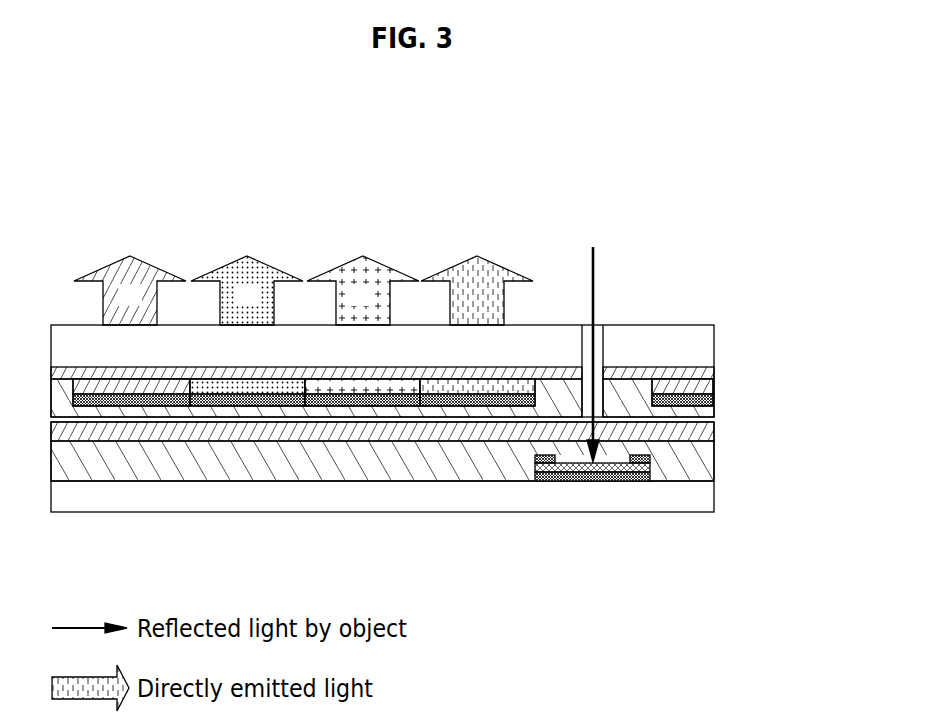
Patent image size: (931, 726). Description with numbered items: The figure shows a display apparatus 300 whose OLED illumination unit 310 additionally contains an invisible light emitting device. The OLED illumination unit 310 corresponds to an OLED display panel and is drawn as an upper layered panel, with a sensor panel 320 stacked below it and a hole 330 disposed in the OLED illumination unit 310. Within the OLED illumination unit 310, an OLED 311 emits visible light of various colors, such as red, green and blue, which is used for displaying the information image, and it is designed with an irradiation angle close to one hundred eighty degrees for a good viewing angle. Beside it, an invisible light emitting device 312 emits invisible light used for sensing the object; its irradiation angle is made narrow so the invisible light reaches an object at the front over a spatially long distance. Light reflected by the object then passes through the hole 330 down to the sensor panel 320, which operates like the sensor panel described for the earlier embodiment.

The display apparatus 300 is at (380, 120).
The OLED illumination unit 310 is at (415, 371).
The OLED 311 is at (171, 384).
The invisible light emitting device 312 is at (478, 385).
The sensor panel 320 is at (717, 422).
The hole 330 is at (603, 338).